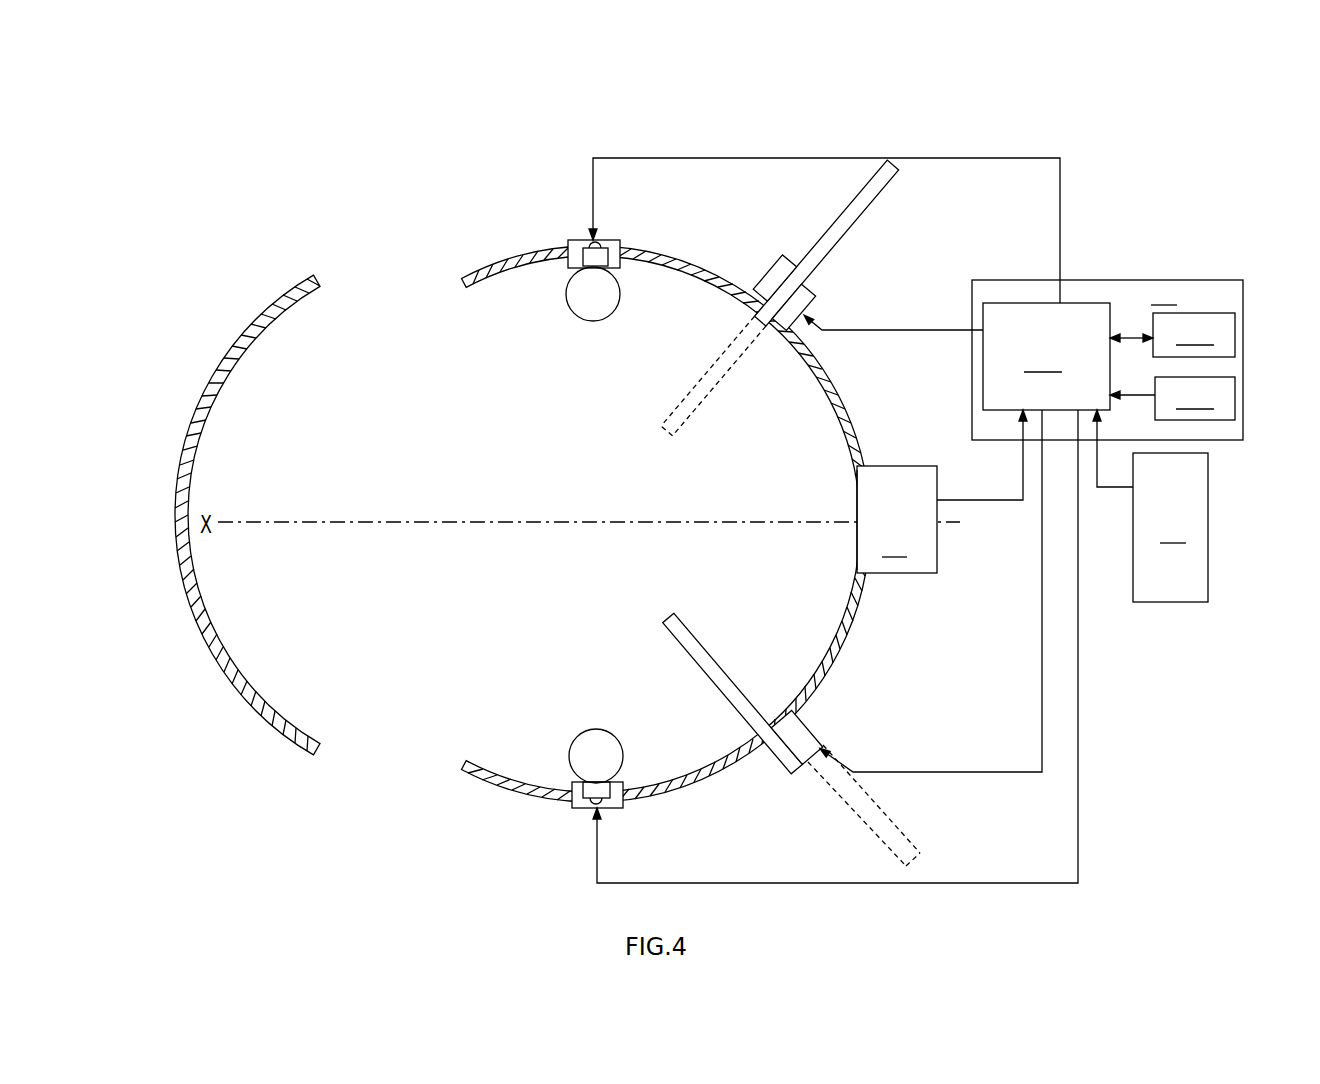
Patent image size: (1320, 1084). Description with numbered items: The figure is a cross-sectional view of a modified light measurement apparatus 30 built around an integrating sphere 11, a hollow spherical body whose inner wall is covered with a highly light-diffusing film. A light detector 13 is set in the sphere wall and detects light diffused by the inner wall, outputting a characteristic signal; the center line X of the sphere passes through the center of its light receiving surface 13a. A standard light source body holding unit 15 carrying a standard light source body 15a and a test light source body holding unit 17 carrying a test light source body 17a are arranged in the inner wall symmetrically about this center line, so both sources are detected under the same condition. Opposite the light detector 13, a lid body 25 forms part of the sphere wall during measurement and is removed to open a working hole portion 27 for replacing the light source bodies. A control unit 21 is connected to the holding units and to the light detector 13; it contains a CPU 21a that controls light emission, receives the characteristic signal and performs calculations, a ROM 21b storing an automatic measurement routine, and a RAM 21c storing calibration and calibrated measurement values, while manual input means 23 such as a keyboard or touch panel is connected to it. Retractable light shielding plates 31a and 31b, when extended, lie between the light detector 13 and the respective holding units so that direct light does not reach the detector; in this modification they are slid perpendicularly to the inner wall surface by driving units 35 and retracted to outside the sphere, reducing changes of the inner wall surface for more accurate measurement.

The integrating sphere 11 is at (470, 767).
The light detector 13 is at (897, 519).
The light receiving surface 13a is at (848, 543).
The standard light source body holding unit 15 is at (568, 247).
The standard light source body 15a is at (590, 288).
The test light source body holding unit 17 is at (577, 800).
The test light source body 17a is at (592, 755).
The control unit 21 is at (1107, 359).
The CPU 21a is at (1046, 356).
The ROM 21b is at (1195, 398).
The RAM 21c is at (1194, 335).
The manual input means 23 is at (1170, 527).
The lid body 25 is at (213, 652).
The working hole portion 27 is at (408, 328).
The light measurement apparatus 30 is at (1108, 167).
The light shielding plate 31a is at (822, 253).
The light shielding plate 31b is at (722, 675).
The driving unit 35 is at (773, 278).